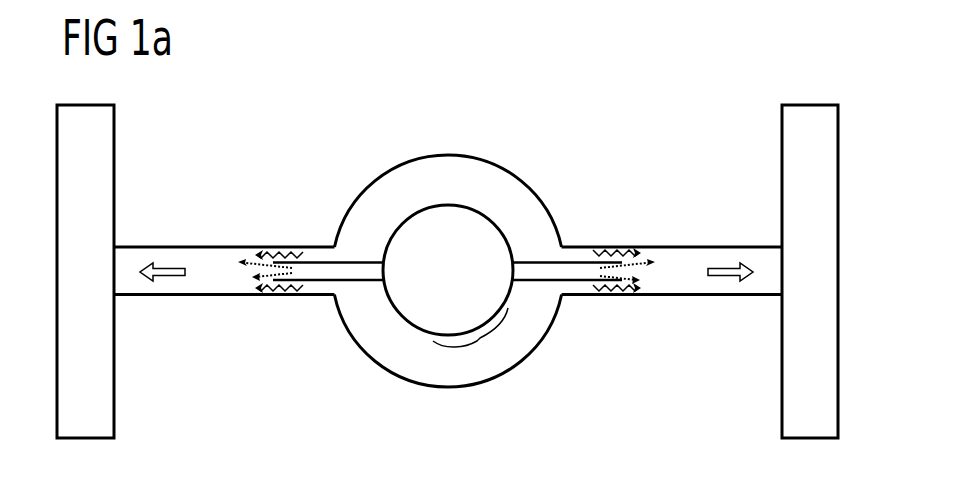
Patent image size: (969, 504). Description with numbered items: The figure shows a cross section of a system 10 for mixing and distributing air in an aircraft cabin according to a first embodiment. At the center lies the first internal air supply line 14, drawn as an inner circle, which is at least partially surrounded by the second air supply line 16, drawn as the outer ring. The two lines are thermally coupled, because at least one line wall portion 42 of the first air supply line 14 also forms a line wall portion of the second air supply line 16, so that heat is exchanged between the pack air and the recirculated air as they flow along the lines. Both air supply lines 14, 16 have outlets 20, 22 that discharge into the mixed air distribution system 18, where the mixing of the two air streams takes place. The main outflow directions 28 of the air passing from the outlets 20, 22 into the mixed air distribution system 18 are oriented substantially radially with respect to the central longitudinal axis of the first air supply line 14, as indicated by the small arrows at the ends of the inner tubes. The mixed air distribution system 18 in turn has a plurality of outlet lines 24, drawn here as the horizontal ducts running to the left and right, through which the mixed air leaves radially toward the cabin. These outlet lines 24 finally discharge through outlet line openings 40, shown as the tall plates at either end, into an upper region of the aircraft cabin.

The system for mixing and distributing air 10 is at (266, 130).
The first internal air supply line 14 is at (418, 299).
The second air supply line 16 is at (371, 214).
The mixed air distribution system 18 is at (205, 250).
The outlet of the first air supply line 20 is at (575, 270).
The outlet of the second air supply line 22 is at (313, 249).
The outlet lines 24 is at (198, 297).
The main outflow directions 28 is at (657, 263).
The outlet line openings 40 is at (792, 138).
The line wall portion 42 is at (470, 342).